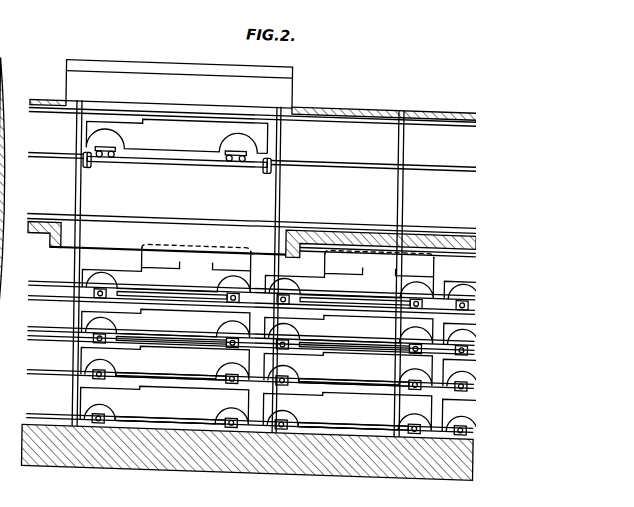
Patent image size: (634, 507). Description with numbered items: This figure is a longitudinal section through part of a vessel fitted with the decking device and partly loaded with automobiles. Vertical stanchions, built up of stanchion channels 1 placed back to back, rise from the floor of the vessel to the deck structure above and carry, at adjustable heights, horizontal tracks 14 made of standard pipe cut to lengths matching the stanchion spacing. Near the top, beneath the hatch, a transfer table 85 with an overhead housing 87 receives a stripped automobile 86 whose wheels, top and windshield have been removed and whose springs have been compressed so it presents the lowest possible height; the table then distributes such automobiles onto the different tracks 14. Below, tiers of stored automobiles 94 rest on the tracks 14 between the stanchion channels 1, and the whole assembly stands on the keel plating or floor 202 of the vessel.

The stanchion channels 1 is at (77, 199).
The track 14 is at (337, 153).
The transfer carriage platform 85 is at (194, 162).
The stripped automobiles 86 is at (176, 135).
The drive housing 87 is at (155, 79).
The stored vehicle 94 is at (346, 340).
The foundation ground slab 202 is at (6, 470).